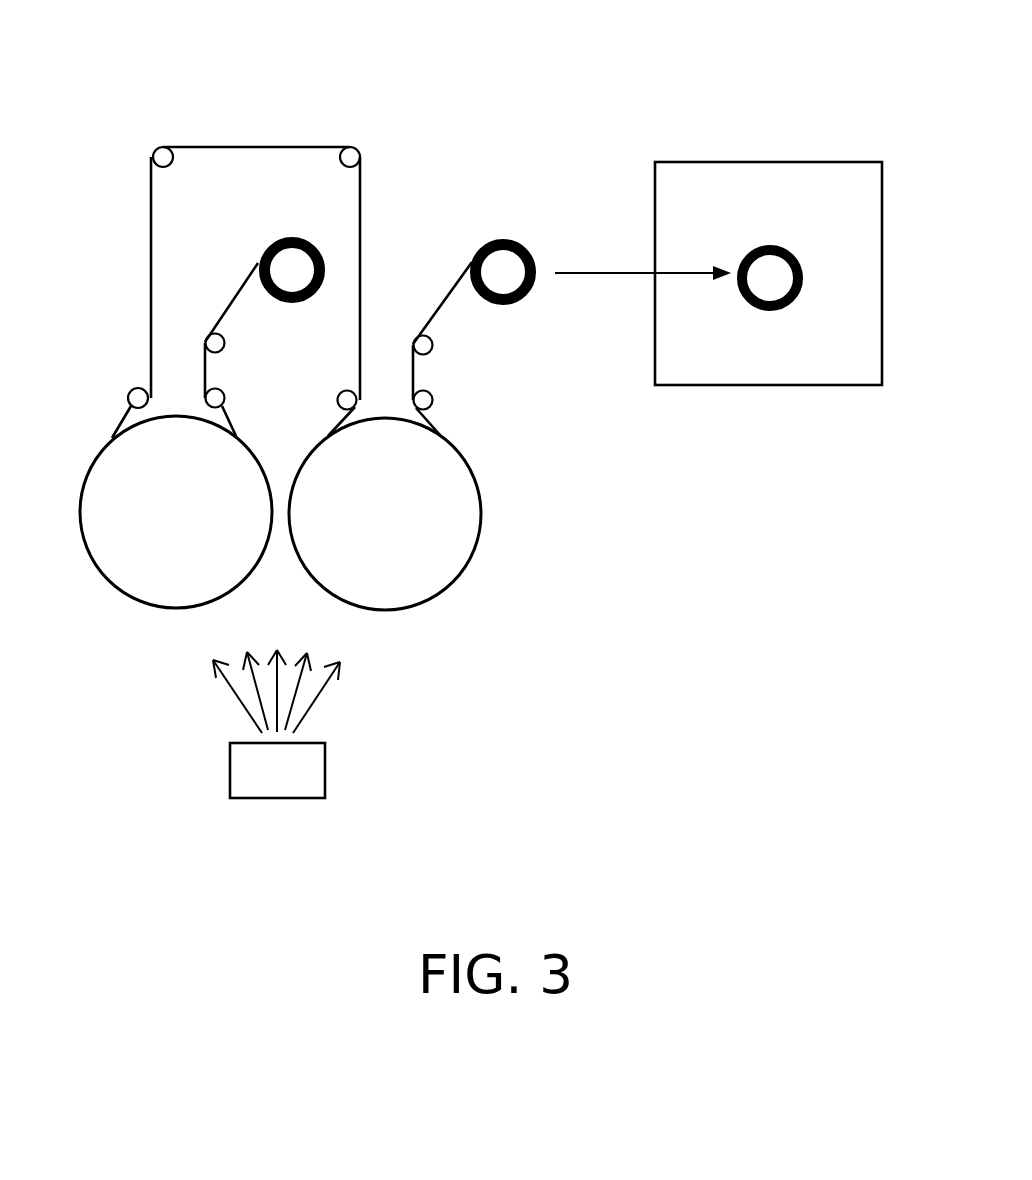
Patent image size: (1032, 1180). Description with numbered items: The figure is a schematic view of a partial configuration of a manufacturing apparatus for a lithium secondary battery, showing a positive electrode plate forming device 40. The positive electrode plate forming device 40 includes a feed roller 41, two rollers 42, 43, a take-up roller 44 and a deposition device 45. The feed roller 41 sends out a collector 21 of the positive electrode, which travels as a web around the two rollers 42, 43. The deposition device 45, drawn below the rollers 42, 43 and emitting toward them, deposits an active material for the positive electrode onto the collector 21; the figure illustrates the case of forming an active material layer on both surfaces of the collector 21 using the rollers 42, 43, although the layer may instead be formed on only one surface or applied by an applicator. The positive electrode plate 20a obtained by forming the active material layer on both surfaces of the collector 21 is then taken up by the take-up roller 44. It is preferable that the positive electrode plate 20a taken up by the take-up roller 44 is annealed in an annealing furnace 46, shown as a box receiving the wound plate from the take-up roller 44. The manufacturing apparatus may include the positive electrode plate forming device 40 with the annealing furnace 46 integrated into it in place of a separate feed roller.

The positive electrode plate forming device 40 is at (98, 103).
The collector 21 is at (232, 290).
The positive electrode plate 20a is at (447, 293).
The feed roller 41 is at (295, 238).
The take-up roller 44 is at (510, 238).
The roller 42 is at (195, 524).
The roller 43 is at (403, 527).
The deposition device 45 is at (277, 800).
The annealing furnace 46 is at (723, 161).